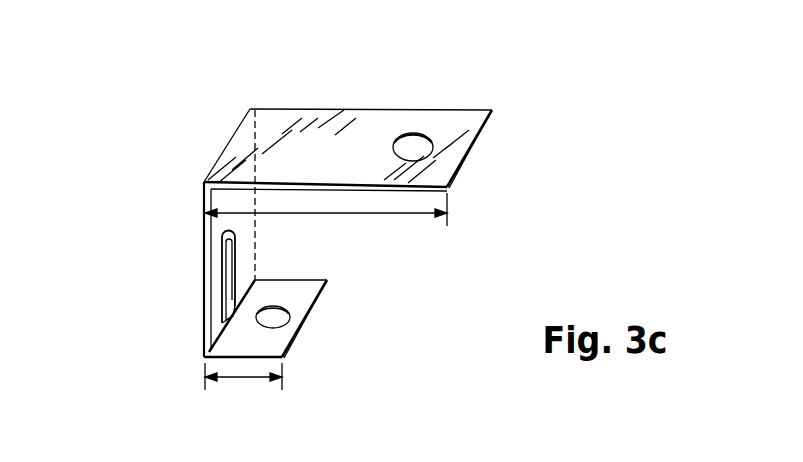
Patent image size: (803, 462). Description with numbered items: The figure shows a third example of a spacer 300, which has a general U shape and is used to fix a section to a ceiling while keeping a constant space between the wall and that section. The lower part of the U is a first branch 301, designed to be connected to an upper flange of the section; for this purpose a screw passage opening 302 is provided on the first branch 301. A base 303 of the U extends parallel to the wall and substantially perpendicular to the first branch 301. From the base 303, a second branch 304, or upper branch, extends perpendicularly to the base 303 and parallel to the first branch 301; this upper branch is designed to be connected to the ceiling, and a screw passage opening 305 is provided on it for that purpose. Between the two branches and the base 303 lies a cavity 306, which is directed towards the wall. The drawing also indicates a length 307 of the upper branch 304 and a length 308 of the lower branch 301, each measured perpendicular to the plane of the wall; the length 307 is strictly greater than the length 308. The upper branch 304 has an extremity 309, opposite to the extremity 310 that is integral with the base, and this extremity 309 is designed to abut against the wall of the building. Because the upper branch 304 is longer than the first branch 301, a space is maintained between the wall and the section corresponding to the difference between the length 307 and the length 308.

The spacer 300 is at (136, 335).
The first branch 301 is at (292, 290).
The screw passage opening 302 is at (285, 308).
The base 303 is at (217, 249).
The second branch 304 is at (310, 120).
The screw passage opening 305 is at (413, 150).
The cavity 306 is at (410, 237).
The length of upper branch 307 is at (326, 219).
The length of lower branch 308 is at (243, 388).
The extremity of upper branch 309 is at (465, 128).
The extremity integral with base 310 is at (236, 136).